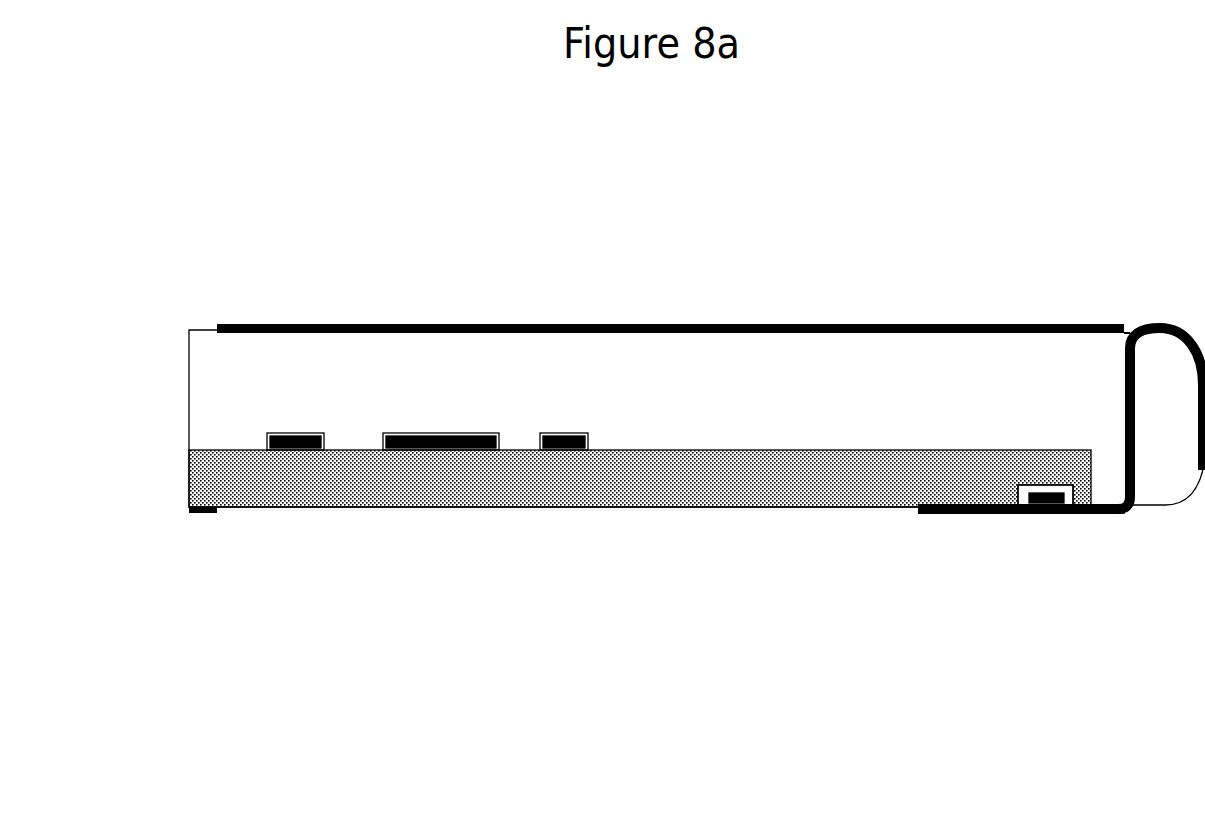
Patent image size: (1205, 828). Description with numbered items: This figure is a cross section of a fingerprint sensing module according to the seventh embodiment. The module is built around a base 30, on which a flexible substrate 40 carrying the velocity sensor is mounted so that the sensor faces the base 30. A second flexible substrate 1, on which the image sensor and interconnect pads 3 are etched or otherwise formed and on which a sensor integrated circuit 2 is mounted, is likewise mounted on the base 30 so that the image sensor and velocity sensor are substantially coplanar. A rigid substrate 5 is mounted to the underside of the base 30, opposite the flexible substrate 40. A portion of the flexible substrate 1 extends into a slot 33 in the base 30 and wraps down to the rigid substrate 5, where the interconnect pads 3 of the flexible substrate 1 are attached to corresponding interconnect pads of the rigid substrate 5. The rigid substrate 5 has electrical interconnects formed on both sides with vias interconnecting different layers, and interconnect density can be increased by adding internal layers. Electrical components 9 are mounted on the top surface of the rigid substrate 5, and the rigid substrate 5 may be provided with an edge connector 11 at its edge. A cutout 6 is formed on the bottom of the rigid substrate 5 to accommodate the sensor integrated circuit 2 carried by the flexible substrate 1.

The flexible substrate 1 is at (1160, 320).
The sensor integrated circuit 2 is at (1047, 488).
The interconnect pads 3 is at (927, 503).
The rigid substrate 5 is at (763, 448).
The cutout 6 is at (1023, 484).
The electrical components 9 is at (297, 432).
The edge connector 11 is at (203, 515).
The base 30 is at (188, 400).
The slot 33 is at (1128, 325).
The flexible substrate 40 is at (216, 323).